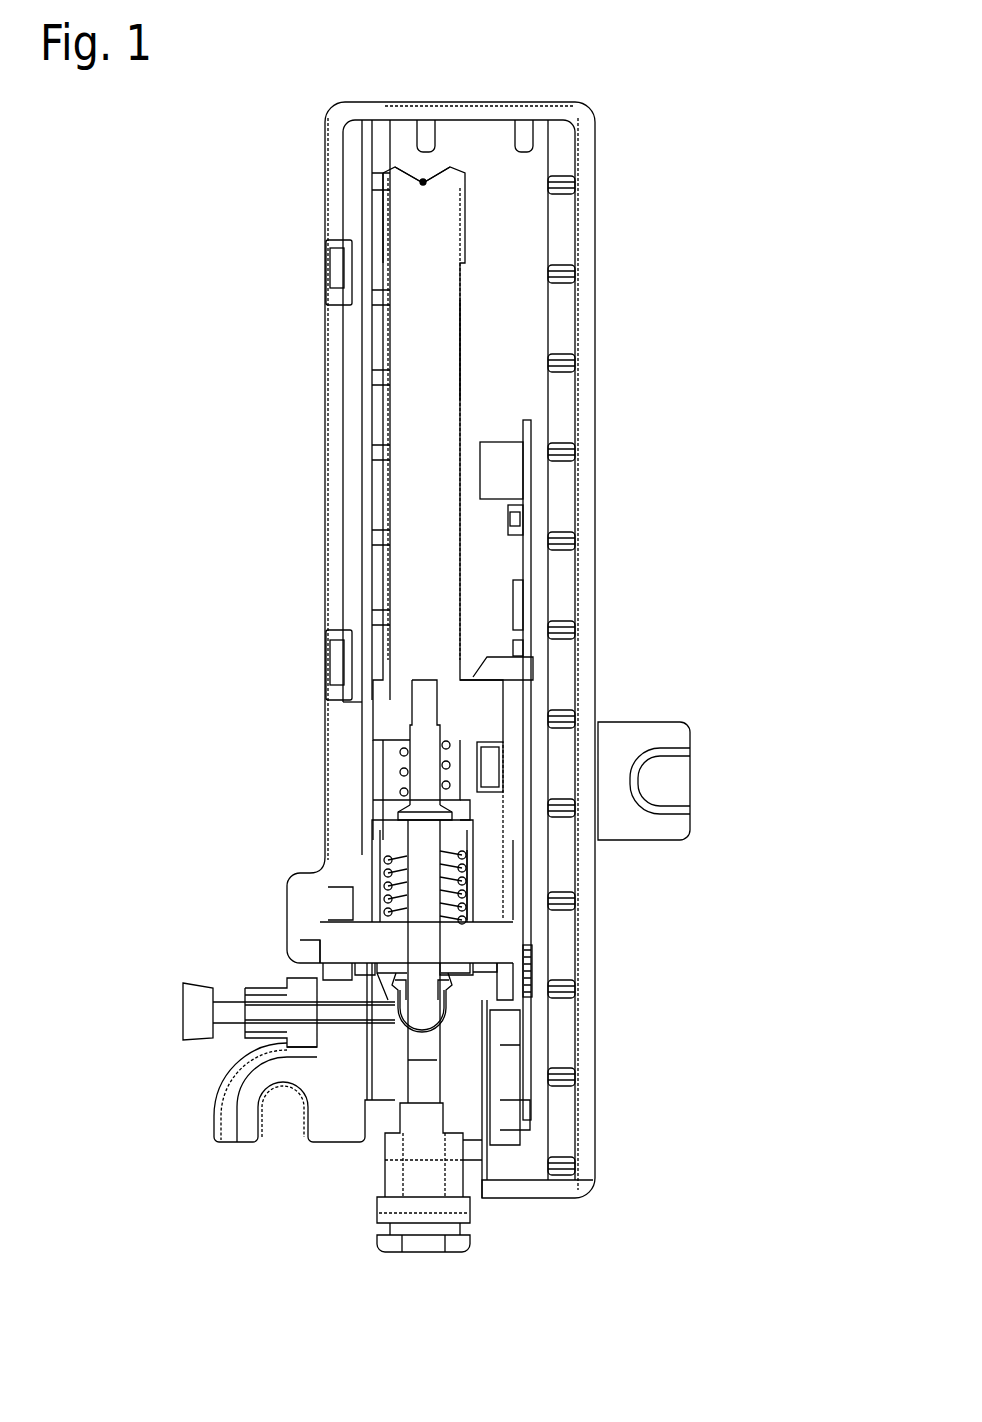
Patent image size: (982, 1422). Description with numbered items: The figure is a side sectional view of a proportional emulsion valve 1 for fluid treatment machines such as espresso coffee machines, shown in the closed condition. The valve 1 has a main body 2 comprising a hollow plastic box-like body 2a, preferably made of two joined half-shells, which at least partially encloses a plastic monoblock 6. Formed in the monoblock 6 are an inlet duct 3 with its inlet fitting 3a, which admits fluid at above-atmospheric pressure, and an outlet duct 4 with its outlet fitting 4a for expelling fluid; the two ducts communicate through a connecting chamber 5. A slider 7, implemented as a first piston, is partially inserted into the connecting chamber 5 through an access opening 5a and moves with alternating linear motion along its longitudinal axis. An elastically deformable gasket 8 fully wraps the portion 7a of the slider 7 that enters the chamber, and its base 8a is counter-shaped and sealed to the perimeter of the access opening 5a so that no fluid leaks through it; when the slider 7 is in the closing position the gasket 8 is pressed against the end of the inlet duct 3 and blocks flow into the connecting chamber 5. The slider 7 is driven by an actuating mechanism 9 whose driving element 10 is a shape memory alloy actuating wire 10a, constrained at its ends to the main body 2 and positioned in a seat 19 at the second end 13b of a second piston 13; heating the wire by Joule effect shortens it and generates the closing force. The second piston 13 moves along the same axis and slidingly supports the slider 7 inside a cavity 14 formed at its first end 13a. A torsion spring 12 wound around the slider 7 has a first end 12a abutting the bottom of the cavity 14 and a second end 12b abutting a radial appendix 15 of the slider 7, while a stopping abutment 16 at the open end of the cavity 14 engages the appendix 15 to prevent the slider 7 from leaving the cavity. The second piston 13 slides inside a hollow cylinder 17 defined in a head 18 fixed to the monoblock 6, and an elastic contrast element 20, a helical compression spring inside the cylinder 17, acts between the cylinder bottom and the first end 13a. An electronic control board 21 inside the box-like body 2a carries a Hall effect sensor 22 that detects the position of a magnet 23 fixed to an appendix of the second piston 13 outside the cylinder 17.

The proportional emulsion valve 1 is at (601, 68).
The main body 2 is at (597, 230).
The hollow box-like body 2a is at (321, 332).
The inlet duct 3 is at (436, 1064).
The inlet fitting 3a is at (450, 1240).
The outlet duct 4 is at (268, 1005).
The outlet fitting 4a is at (190, 990).
The connecting chamber 5 is at (458, 1020).
The access opening 5a is at (462, 960).
The monoblock 6 is at (476, 1082).
The slider 7 is at (432, 904).
The portion of the slider 7a is at (410, 992).
The gasket 8 is at (397, 1030).
The base of the gasket 8a is at (372, 960).
The actuating mechanism 9 is at (464, 368).
The driving element 10 is at (415, 176).
The actuating wire 10a is at (430, 177).
The torsion spring 12 is at (448, 758).
The first end of the torsion spring 12a is at (453, 738).
The second end of the torsion spring 12b is at (398, 793).
The second piston 13 is at (401, 523).
The first end of the second piston 13a is at (476, 818).
The second end of the second piston 13b is at (392, 216).
The cavity 14 is at (382, 763).
The appendix 15 is at (396, 812).
The stopping abutment 16 is at (398, 835).
The hollow cylinder 17 is at (357, 706).
The head 18 is at (350, 838).
The seat 19 is at (435, 200).
The elastic contrast element 20 is at (463, 857).
The electronic control board 21 is at (537, 526).
The Hall effect sensor 22 is at (502, 762).
The magnet 23 is at (532, 746).